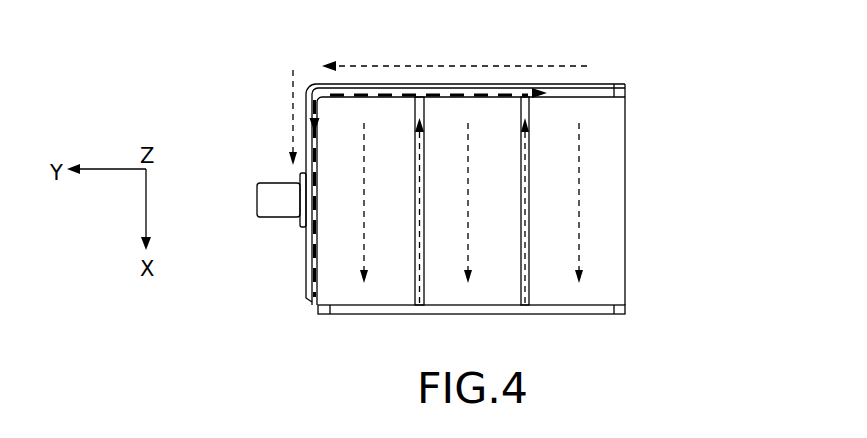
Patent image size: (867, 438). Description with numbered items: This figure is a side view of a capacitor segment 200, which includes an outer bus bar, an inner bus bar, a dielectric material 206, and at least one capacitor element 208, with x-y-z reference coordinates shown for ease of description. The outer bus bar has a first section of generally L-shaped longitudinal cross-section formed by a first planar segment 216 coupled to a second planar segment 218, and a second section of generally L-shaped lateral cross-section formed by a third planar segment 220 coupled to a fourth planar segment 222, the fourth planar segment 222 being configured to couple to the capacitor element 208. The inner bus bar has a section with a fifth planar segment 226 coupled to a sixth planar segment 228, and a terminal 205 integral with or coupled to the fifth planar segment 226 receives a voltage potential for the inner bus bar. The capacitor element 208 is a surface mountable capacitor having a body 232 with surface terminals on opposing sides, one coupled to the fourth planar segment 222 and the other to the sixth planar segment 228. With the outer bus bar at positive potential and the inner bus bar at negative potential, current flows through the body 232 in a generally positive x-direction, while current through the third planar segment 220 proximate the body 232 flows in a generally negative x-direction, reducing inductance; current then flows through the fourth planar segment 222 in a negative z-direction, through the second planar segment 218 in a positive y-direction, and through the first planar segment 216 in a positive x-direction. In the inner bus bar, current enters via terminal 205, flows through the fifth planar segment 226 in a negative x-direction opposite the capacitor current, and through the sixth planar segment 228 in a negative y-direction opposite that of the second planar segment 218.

The capacitor segment 200 is at (232, 45).
The terminal 205 is at (257, 205).
The dielectric material 206 is at (580, 84).
The capacitor element 208 is at (690, 154).
The first planar segment 216 is at (305, 282).
The second planar segment 218 is at (612, 84).
The third planar segment 220 is at (527, 316).
The fourth planar segment 222 is at (605, 316).
The fifth planar segment 226 is at (320, 316).
The sixth planar segment 228 is at (625, 92).
The body 232 is at (613, 220).